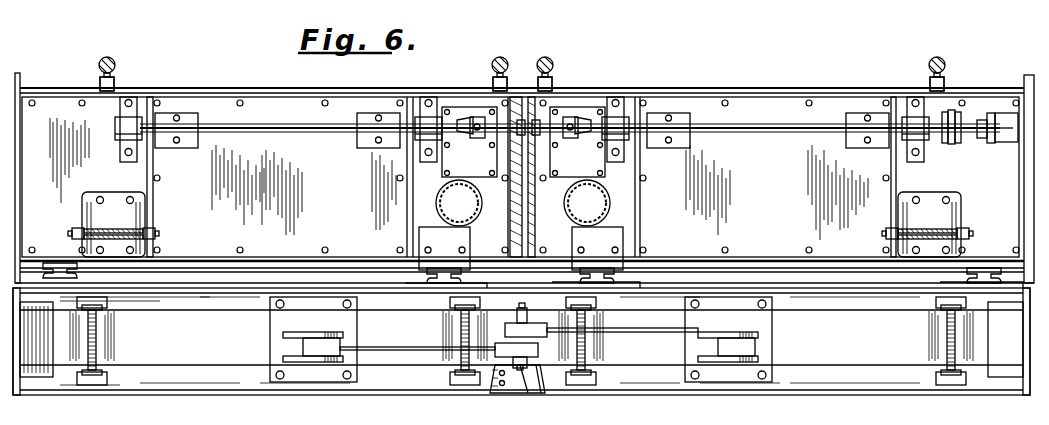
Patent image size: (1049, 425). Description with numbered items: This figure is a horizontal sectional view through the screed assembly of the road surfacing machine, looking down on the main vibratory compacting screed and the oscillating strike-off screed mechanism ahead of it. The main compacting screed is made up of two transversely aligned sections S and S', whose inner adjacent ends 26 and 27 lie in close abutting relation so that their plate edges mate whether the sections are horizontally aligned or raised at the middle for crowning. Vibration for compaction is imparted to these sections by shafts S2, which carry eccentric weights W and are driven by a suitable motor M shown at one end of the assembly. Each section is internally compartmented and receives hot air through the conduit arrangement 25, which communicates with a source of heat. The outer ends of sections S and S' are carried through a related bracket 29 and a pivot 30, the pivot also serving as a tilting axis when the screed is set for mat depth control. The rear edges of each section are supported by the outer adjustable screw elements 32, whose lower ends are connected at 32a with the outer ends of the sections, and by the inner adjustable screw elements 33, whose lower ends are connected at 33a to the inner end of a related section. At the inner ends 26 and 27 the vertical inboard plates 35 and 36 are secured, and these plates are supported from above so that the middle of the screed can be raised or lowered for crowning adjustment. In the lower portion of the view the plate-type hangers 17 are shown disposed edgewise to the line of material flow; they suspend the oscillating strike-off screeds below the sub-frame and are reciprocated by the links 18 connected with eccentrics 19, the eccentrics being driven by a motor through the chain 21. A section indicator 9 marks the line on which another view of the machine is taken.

The base frame 9 is at (925, 281).
The plate-type hanger 17 is at (96, 348).
The link 18 is at (388, 346).
The eccentric 19 is at (500, 324).
The chain 21 is at (496, 348).
The conduit arrangement 25 is at (468, 212).
The inner end of screed section S 26 is at (456, 246).
The inner end of screed section S' 27 is at (557, 237).
The bracket 29 is at (115, 197).
The pivot 30 is at (132, 231).
The outer adjustable screw element 32 is at (115, 62).
The lower-end connection of outer screw element 32a is at (114, 80).
The inner adjustable screw element 33 is at (539, 64).
The lower-end connection of inner screw element 33a is at (492, 80).
The vertical inboard plate 35 is at (510, 163).
The vertical inboard plate 36 is at (532, 163).
The eccentric weight W is at (185, 114).
The screed section S is at (320, 209).
The screed section S' is at (764, 209).
The shaft S2 is at (301, 124).
The motor M is at (1008, 112).